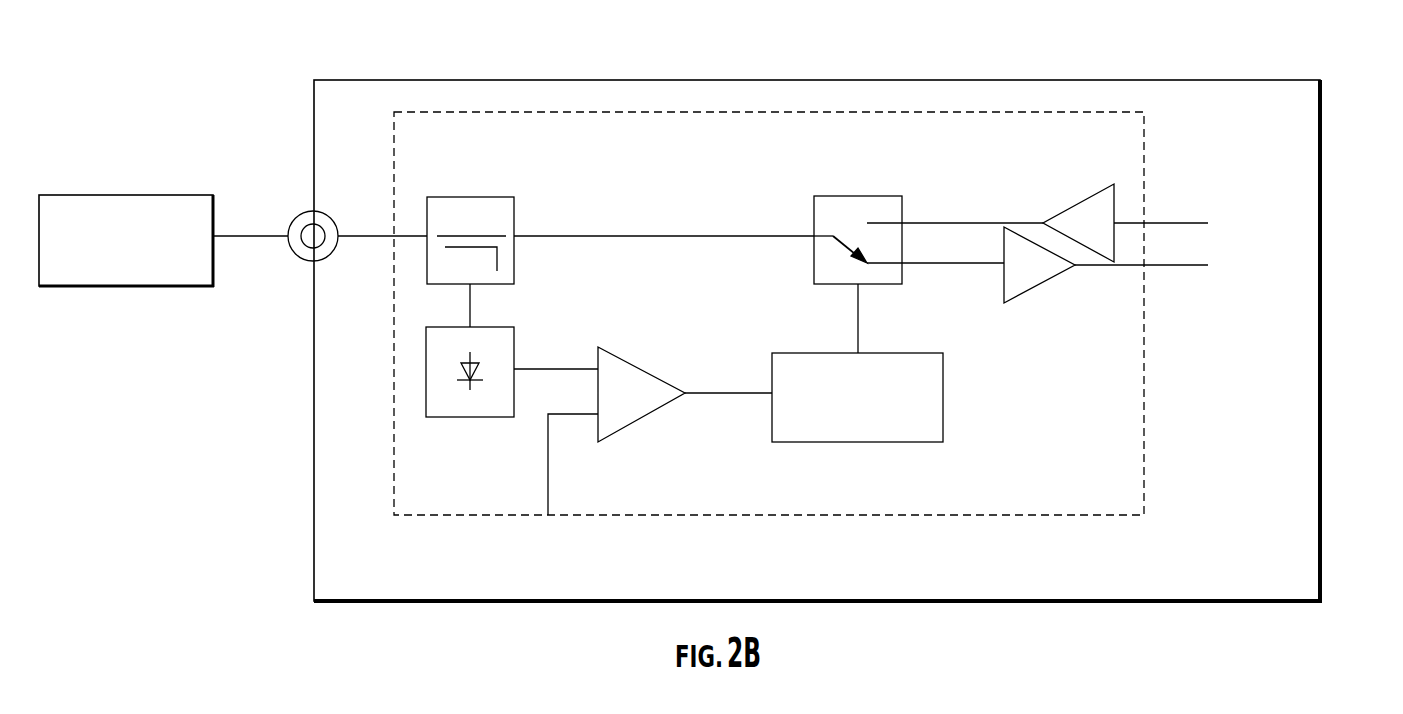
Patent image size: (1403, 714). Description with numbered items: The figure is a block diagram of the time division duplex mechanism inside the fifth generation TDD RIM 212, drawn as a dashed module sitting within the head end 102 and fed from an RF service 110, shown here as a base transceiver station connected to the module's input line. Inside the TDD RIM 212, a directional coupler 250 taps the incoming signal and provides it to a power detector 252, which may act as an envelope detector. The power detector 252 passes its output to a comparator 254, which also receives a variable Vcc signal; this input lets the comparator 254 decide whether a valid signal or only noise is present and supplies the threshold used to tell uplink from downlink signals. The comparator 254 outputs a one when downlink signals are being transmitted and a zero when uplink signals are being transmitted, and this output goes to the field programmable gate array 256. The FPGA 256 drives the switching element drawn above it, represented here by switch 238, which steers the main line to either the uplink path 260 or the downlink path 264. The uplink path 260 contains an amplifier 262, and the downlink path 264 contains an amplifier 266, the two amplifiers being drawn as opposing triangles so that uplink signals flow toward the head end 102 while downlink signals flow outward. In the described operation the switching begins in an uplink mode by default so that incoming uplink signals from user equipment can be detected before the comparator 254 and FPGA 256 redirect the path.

The head end 102 is at (1049, 80).
The RF service 110 is at (115, 287).
The 5G TDD RIM 212 is at (1144, 153).
The switch 238 is at (902, 202).
The directional coupler 250 is at (514, 208).
The power detector 252 is at (514, 330).
The comparator 254 is at (641, 412).
The field programmable gate array (FPGA) 256 is at (943, 405).
The uplink path 260 is at (1307, 233).
The amplifier 262 is at (1114, 205).
The downlink path 264 is at (1307, 272).
The amplifier 266 is at (1035, 283).